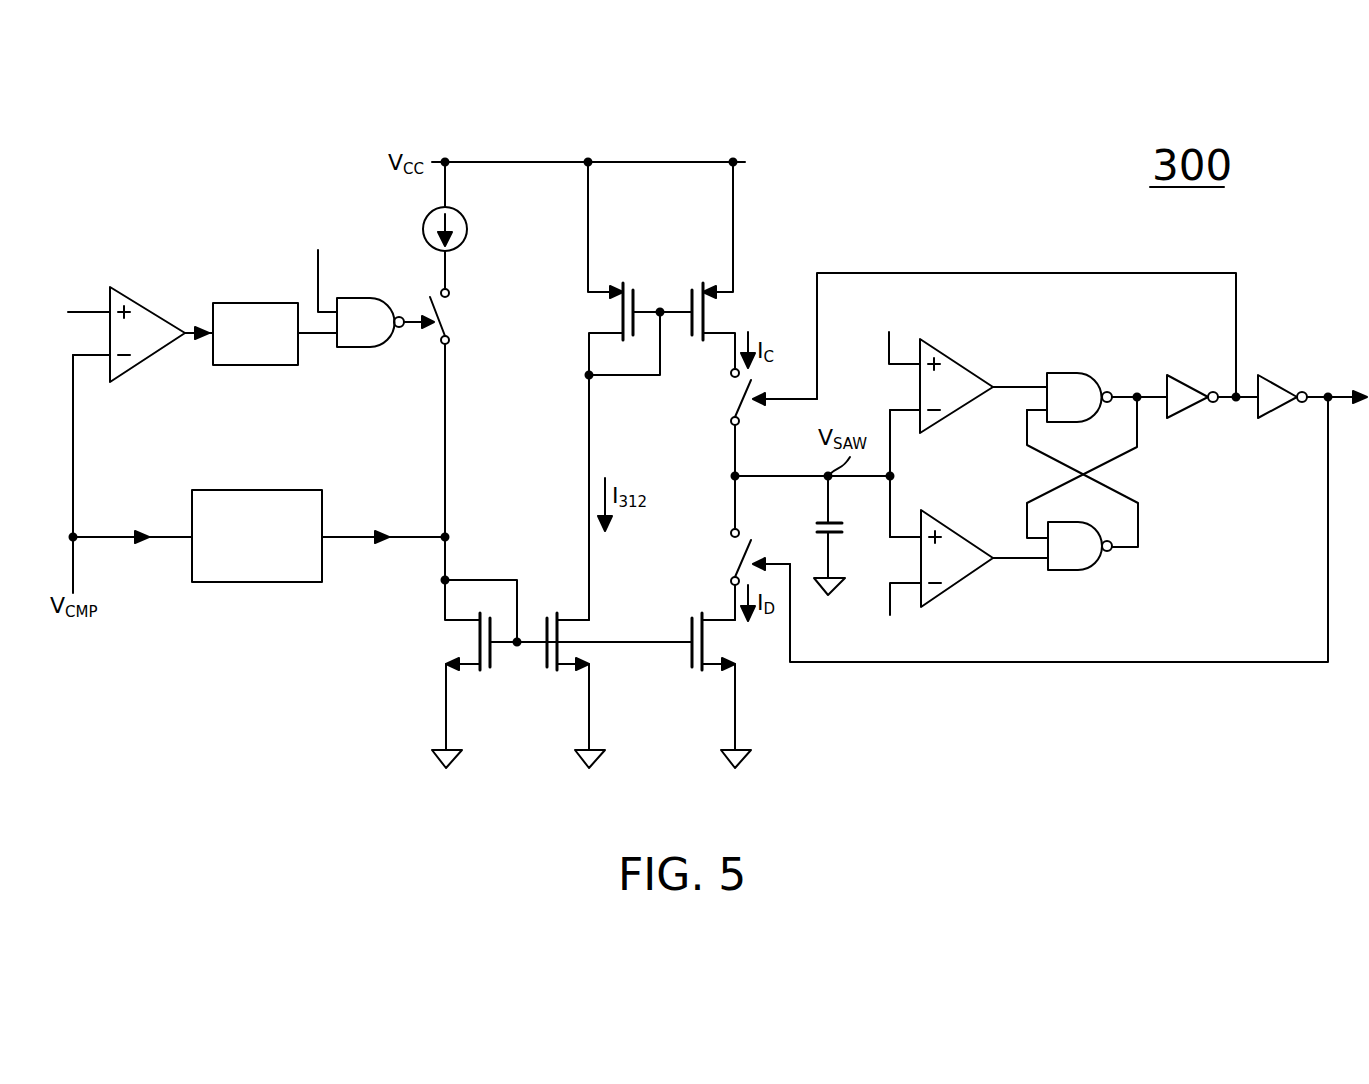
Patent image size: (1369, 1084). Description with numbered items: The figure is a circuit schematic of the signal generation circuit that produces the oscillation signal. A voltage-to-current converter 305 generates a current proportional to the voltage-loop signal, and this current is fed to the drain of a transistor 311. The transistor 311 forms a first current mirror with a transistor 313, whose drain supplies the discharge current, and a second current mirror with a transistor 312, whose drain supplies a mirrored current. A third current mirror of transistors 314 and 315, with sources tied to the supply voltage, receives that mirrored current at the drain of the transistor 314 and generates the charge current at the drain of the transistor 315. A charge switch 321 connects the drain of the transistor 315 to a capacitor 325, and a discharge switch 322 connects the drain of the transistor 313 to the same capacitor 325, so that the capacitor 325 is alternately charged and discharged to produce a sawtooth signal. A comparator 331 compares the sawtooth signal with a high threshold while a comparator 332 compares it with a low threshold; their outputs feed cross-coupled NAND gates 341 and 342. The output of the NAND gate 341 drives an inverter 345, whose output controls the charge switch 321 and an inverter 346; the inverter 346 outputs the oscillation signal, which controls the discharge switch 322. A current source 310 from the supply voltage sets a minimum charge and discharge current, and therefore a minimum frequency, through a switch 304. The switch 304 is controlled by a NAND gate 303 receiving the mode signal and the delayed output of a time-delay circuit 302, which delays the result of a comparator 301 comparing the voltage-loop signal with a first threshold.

The comparator 301 is at (121, 328).
The time-delay circuit 302 is at (275, 320).
The NAND gate 303 is at (342, 283).
The switch 304 is at (452, 316).
The voltage-to-current converter 305 is at (259, 521).
The current source 310 is at (470, 225).
The transistor 311 is at (474, 673).
The transistor 312 is at (612, 690).
The transistor 313 is at (715, 690).
The transistor 314 is at (603, 391).
The transistor 315 is at (719, 265).
The charge switch 321 is at (961, 349).
The discharge switch 322 is at (1007, 529).
The capacitor 325 is at (807, 535).
The comparator 331 is at (962, 390).
The comparator 332 is at (963, 561).
The NAND gate 341 is at (1097, 446).
The NAND gate 342 is at (1080, 562).
The inverter 345 is at (1212, 381).
The inverter 346 is at (1312, 381).